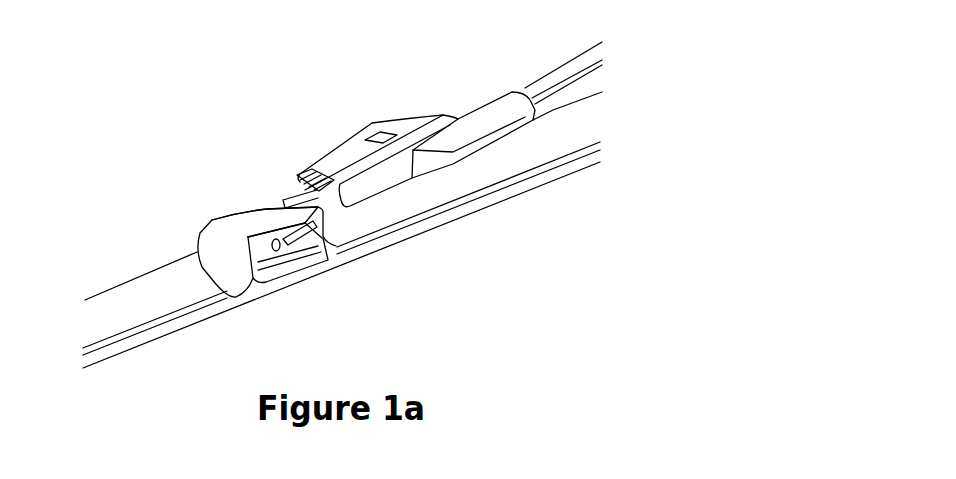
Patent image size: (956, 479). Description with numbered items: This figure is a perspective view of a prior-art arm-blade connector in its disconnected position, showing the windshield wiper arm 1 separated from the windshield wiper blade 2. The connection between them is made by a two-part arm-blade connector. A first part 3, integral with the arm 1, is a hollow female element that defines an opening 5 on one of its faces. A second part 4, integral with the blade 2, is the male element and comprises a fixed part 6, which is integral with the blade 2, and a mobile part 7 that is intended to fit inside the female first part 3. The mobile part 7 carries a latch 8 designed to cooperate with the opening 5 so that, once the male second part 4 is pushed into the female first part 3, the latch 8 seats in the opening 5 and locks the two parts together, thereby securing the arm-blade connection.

The windshield wiper arm 1 is at (543, 88).
The windshield wiper blade 2 is at (152, 297).
The first part 3 is at (333, 147).
The second part 4 is at (220, 250).
The opening 5 is at (382, 125).
The fixed part 6 is at (240, 287).
The mobile part 7 is at (255, 218).
The latch 8 is at (295, 180).